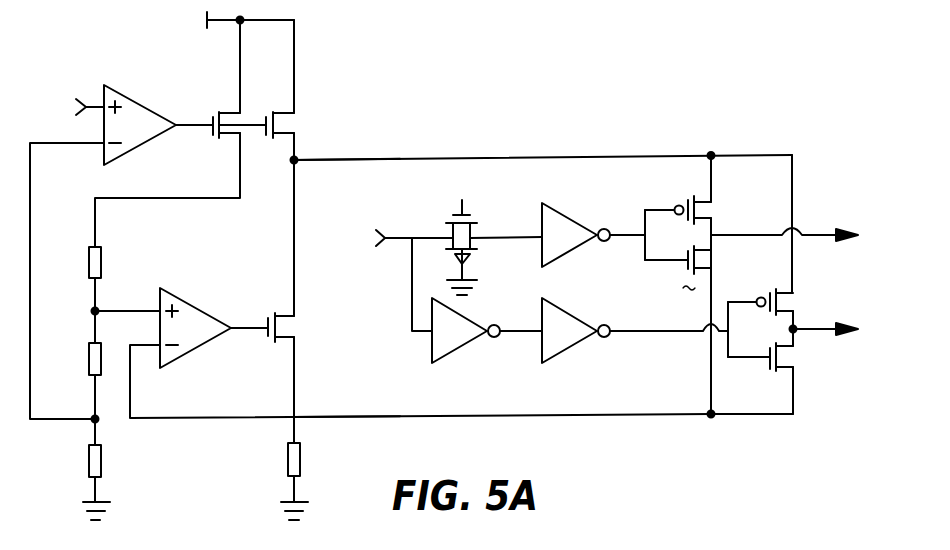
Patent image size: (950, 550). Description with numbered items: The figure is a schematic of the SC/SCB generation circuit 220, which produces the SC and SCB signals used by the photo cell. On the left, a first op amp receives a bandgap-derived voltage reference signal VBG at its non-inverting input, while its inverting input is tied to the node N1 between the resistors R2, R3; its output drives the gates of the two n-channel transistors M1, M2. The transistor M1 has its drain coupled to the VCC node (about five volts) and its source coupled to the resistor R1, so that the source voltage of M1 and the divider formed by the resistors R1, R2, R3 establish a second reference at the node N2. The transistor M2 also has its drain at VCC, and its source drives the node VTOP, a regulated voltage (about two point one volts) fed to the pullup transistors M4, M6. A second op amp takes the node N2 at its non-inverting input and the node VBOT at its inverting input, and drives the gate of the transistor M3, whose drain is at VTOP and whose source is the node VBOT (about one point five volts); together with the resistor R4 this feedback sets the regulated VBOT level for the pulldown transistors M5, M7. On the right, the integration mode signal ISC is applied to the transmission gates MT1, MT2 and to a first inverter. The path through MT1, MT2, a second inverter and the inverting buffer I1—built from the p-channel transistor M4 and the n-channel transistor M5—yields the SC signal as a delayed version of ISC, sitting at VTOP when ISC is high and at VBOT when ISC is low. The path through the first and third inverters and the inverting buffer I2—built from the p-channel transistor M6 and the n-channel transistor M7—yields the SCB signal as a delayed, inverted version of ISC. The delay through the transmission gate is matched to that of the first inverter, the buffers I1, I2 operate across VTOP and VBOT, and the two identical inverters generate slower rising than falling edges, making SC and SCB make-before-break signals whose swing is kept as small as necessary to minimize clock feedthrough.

The SC/SCB generation circuit 220 is at (560, 75).
The VCC node VCC is at (318, 113).
The voltage reference signal VBG is at (63, 108).
The n-channel transistor M1 is at (230, 110).
The n-channel transistor M2 is at (299, 115).
The VTOP node VTOP is at (347, 175).
The resistor R1 is at (73, 279).
The node N2 is at (93, 309).
The n-channel transistor M3 is at (301, 320).
The VBOT node VBOT is at (347, 402).
The resistor R2 is at (74, 365).
The node N1 is at (93, 417).
The resistor R3 is at (79, 469).
The resistor R4 is at (279, 481).
The integration mode signal ISC is at (391, 278).
The transmission gate MT1 is at (436, 230).
The transmission gate MT2 is at (494, 266).
The inverting buffer I1 is at (683, 199).
The p-channel transistor M4 is at (718, 210).
The n-channel transistor M5 is at (696, 268).
The SC signal SC is at (800, 236).
The p-channel transistor M6 is at (779, 323).
The n-channel transistor M7 is at (779, 357).
The SCB signal SCB is at (847, 331).
The inverting buffer I2 is at (770, 368).